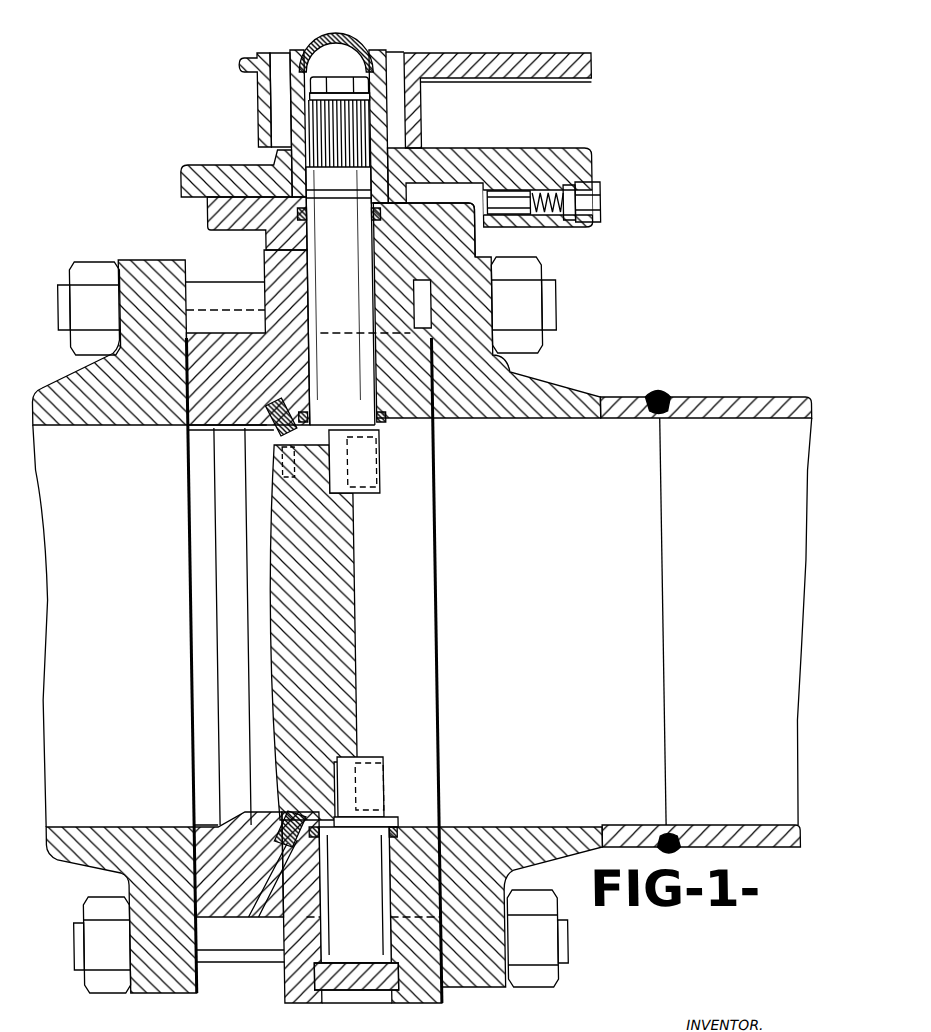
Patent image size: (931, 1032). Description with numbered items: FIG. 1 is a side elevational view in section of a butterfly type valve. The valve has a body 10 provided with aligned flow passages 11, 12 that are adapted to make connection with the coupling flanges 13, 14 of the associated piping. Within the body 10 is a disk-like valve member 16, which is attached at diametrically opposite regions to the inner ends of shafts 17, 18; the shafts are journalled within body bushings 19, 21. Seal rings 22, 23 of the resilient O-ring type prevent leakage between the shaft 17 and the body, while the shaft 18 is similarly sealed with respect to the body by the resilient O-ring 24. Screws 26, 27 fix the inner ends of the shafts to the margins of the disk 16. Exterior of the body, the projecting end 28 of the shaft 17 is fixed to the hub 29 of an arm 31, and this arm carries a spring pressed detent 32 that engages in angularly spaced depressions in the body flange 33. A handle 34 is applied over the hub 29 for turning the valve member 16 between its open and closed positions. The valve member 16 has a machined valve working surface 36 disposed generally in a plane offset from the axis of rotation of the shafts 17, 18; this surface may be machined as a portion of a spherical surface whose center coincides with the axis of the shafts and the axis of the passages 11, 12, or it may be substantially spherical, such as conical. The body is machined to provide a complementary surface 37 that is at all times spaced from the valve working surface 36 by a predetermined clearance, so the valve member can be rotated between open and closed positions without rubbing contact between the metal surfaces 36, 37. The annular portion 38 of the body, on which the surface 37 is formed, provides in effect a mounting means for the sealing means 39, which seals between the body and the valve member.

The body 10 is at (415, 385).
The flow passage 11 is at (203, 495).
The flow passage 12 is at (413, 497).
The coupling flange 13 is at (87, 375).
The coupling flange 14 is at (562, 386).
The valve member 16 is at (336, 560).
The shaft 17 is at (327, 257).
The shaft 18 is at (333, 933).
The body bushing 19 is at (387, 267).
The body bushing 21 is at (386, 850).
The seal ring 22 is at (394, 422).
The seal ring 23 is at (304, 222).
The O-ring 24 is at (392, 845).
The screw 26 is at (363, 470).
The screw 27 is at (373, 783).
The projecting end 28 is at (389, 120).
The hub 29 is at (399, 177).
The arm 31 is at (525, 158).
The spring pressed detent 32 is at (527, 197).
The body flange 33 is at (211, 216).
The handle 34 is at (493, 53).
The valve working surface 36 is at (288, 452).
The complementary surface 37 is at (273, 415).
The annular portion 38 is at (258, 418).
The sealing means 39 is at (263, 822).